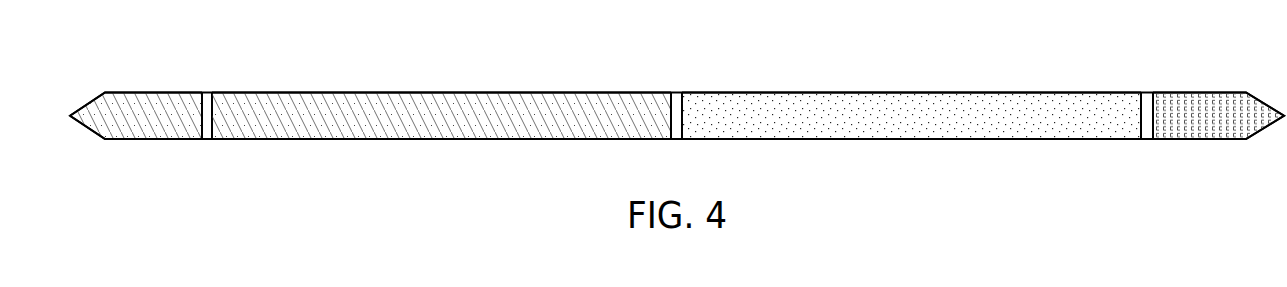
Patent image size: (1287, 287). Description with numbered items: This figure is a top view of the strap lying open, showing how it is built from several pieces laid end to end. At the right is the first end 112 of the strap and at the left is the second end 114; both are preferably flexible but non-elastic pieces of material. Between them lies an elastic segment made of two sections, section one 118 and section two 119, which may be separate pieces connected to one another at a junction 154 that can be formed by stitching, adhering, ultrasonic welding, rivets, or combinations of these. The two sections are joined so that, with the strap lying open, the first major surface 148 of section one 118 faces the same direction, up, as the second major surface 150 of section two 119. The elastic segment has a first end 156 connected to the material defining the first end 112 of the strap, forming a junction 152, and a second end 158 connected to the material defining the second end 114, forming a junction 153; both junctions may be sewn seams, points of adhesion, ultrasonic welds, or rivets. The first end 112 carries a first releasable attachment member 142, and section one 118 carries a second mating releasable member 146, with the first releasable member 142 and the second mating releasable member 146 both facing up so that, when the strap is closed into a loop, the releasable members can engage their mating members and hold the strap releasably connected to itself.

The first end 112 is at (1213, 92).
The second end 114 is at (122, 92).
The section one 118 is at (930, 92).
The section two 119 is at (435, 92).
The first releasable attachment member 142 is at (1203, 139).
The second mating releasable member 146 is at (847, 139).
The first major surface 148 is at (965, 139).
The second major surface 150 is at (448, 139).
The junction 152 is at (1145, 92).
The junction 153 is at (204, 92).
The junction 154 is at (675, 92).
The first end of the segment 156 is at (1117, 139).
The second end of the segment 158 is at (223, 139).